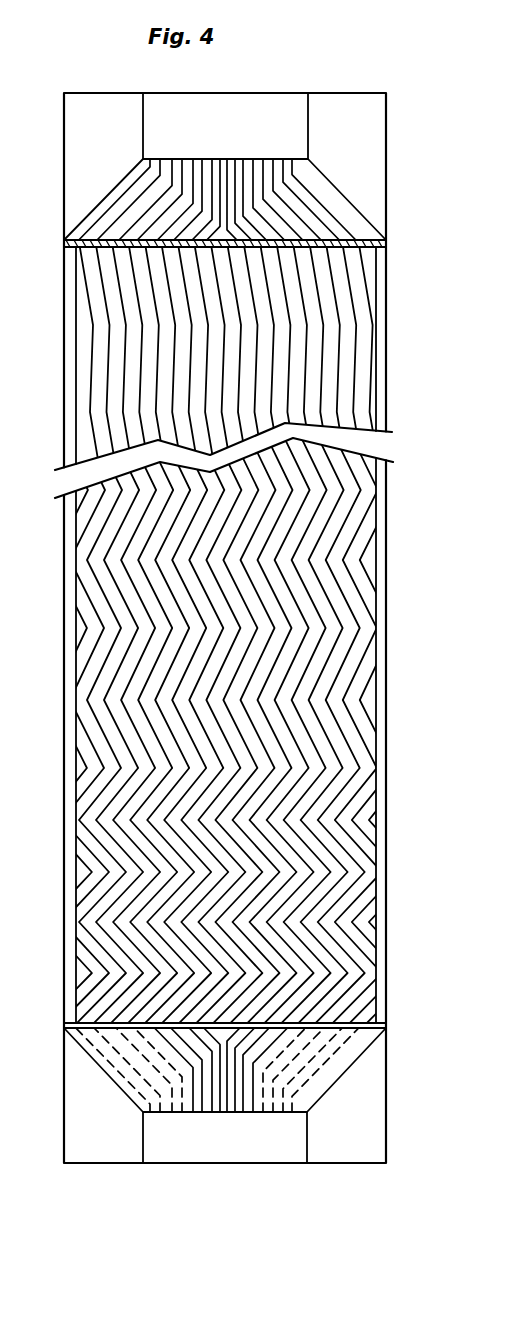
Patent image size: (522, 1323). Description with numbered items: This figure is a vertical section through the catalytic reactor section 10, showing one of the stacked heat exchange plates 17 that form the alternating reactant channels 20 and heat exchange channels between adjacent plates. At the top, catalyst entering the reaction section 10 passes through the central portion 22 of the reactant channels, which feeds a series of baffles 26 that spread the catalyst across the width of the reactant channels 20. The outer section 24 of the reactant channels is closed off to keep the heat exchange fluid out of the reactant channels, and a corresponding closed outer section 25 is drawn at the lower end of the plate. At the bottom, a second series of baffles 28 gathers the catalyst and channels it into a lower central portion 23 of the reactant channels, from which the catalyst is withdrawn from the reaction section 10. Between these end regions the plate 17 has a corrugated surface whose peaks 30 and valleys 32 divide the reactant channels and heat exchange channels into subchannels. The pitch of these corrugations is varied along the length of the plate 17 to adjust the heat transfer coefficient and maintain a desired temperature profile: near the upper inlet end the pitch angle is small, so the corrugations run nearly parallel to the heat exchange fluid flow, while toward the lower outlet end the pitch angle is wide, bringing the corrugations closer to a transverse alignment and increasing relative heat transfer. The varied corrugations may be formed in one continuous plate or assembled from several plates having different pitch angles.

The catalytic reactor section 10 is at (378, 725).
The heat exchange plate 17 is at (337, 520).
The reactant channels 20 is at (340, 308).
The central portion of the reactant channels 22 is at (232, 112).
The central portion of the reactant channels 23 is at (230, 1150).
The outer section of reactant channels 24 is at (350, 137).
The outlet header 25 is at (357, 1125).
The baffles 26 is at (300, 212).
The baffles 28 is at (305, 1082).
The peaks 30 is at (226, 636).
The valleys 32 is at (120, 298).